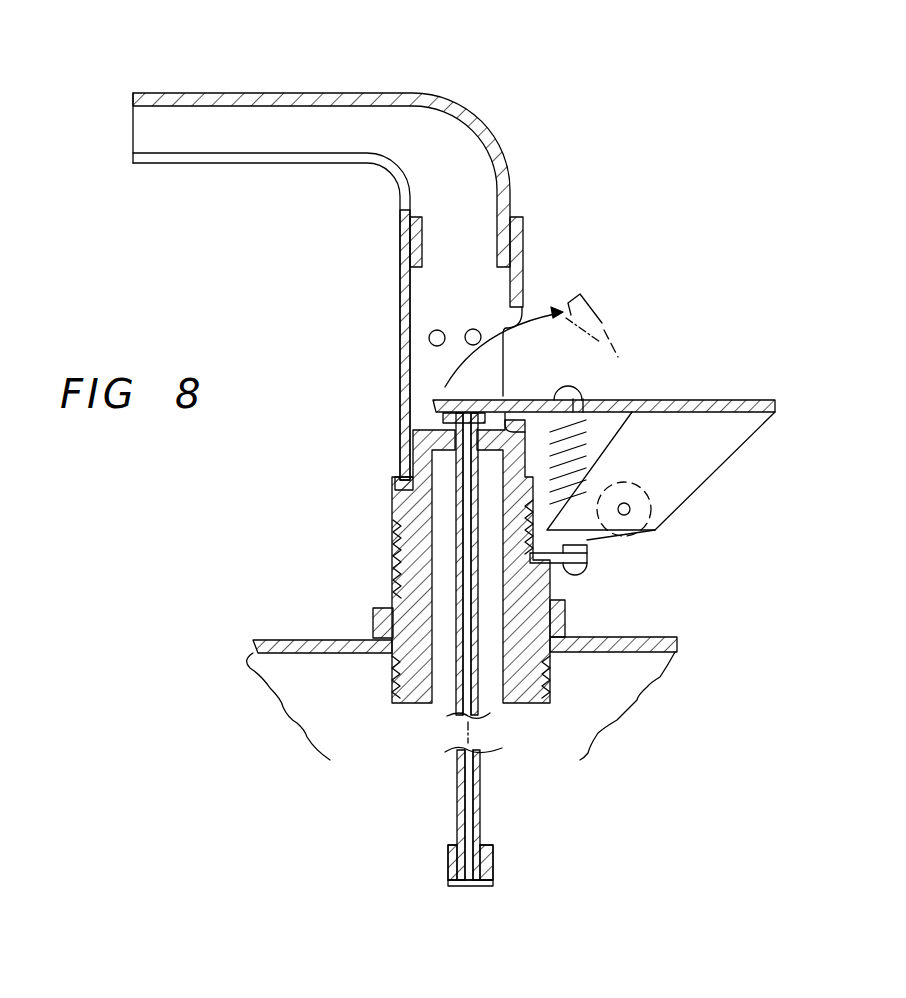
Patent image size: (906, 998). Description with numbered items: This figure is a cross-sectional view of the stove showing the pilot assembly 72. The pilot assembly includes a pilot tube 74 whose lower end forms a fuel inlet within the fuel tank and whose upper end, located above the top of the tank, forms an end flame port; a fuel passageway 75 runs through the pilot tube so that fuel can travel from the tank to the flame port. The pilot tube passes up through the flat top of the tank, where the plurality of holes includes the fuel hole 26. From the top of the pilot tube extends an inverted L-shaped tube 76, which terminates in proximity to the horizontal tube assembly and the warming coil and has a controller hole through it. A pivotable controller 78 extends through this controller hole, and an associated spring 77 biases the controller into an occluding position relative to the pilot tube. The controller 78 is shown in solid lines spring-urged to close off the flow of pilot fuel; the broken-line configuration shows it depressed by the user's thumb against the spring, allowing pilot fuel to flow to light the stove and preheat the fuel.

The inverted L-shaped tube 76 is at (333, 92).
The pilot assembly 72 is at (637, 377).
The pivotable controller 78 is at (697, 398).
The spring 77 is at (590, 563).
The fuel hole 26 is at (388, 655).
The pilot tube 74 is at (456, 695).
The fuel passageway 75 is at (480, 808).